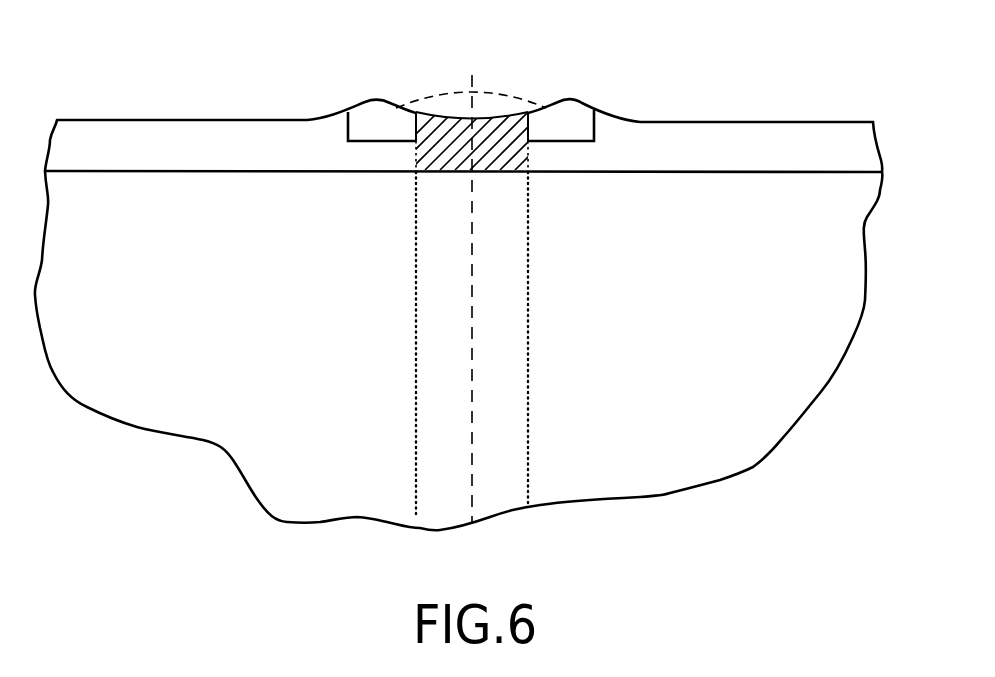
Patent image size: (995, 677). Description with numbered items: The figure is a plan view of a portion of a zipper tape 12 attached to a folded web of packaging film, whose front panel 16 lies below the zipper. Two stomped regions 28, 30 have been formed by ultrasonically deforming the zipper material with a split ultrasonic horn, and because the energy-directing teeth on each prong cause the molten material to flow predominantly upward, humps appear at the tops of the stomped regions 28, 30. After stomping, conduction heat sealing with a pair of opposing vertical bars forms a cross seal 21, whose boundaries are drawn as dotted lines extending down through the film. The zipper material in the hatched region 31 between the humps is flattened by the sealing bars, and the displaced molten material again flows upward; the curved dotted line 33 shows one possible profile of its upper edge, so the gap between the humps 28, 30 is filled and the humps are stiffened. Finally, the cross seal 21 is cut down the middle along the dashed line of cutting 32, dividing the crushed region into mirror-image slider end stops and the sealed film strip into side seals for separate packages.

The zipper tape 12 is at (768, 128).
The front panel 16 is at (750, 462).
The cross seal 21 is at (508, 405).
The stomped region 28 is at (362, 112).
The stomped region 30 is at (578, 110).
The hatched region 31 is at (502, 150).
The line of cutting 32 is at (473, 317).
The curved dotted line 33 is at (483, 93).